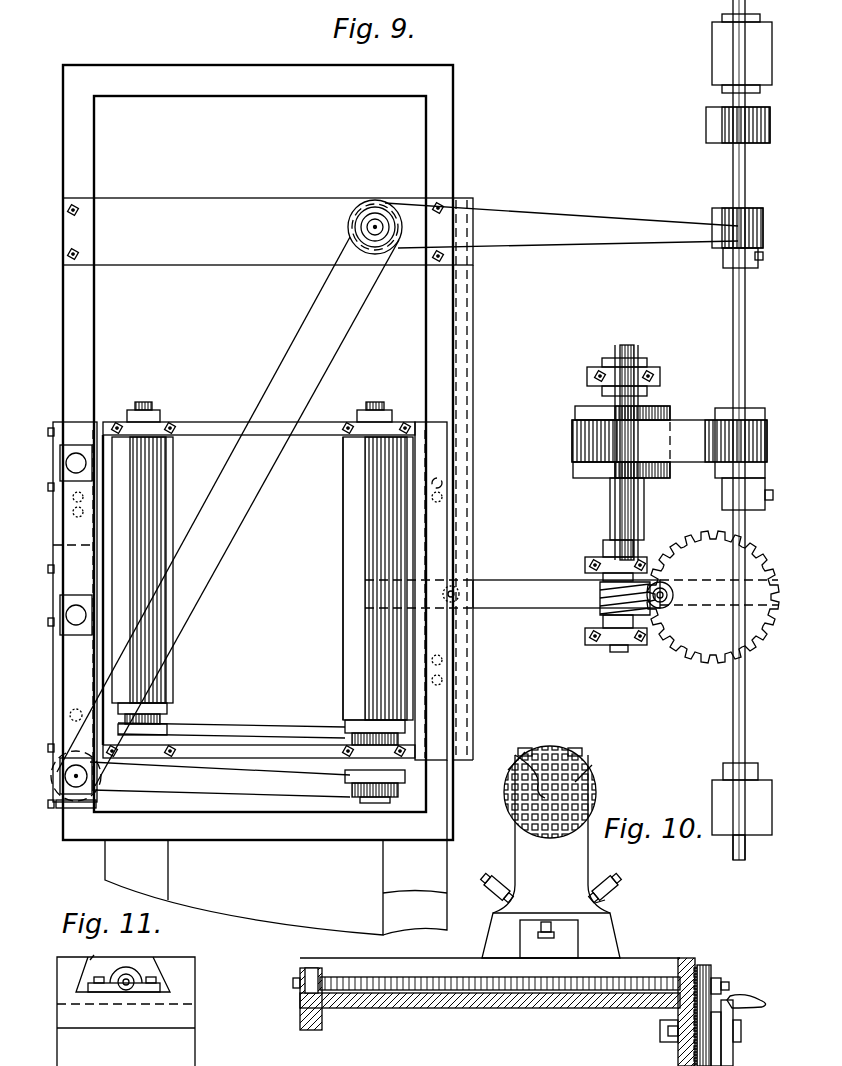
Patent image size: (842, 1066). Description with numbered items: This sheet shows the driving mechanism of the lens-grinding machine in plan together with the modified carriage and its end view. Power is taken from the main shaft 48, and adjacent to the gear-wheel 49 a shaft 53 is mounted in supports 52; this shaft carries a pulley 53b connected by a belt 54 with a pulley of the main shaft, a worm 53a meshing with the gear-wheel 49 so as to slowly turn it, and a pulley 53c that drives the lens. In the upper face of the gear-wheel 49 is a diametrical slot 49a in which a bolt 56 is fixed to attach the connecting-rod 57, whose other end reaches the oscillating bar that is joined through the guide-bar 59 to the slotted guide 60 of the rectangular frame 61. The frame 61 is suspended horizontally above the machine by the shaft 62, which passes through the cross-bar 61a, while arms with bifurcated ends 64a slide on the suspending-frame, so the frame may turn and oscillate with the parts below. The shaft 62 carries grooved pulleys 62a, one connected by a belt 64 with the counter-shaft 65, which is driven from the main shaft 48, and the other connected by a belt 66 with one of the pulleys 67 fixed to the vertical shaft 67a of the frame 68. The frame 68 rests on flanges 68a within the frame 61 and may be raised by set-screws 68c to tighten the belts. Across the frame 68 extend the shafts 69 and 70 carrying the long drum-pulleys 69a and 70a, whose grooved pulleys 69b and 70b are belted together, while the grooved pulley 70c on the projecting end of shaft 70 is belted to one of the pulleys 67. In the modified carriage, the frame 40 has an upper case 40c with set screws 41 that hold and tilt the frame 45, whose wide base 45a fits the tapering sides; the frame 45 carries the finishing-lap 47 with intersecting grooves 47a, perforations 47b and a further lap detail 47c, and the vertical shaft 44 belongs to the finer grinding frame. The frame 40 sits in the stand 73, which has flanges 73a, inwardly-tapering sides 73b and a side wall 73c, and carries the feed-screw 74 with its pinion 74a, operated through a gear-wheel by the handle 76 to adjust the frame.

In FIG. 9, the rectangular frame 61 is at (252, 82).
In FIG. 9, the cross-bar 61a is at (268, 231).
In FIG. 9, the shaft 62 is at (378, 222).
In FIG. 9, the grooved pulleys 62a is at (360, 208).
In FIG. 9, the belt 64 is at (610, 225).
In FIG. 9, the bifurcated ends 64a is at (175, 870).
In FIG. 9, the counter-shaft 65 is at (733, 174).
In FIG. 9, the belt 66 is at (330, 335).
In FIG. 9, the pulleys 67 is at (62, 773).
In FIG. 9, the vertical shaft 67a is at (60, 800).
In FIG. 9, the frame 68 is at (222, 420).
In FIG. 9, the flanges 68a is at (430, 420).
In FIG. 9, the set-screws 68c is at (455, 482).
In FIG. 9, the shaft 69 is at (152, 402).
In FIG. 9, the drum-pulley 69a is at (72, 556).
In FIG. 9, the grooved pulley 69b is at (160, 715).
In FIG. 9, the shaft 70 is at (384, 392).
In FIG. 9, the drum-pulley 70a is at (360, 570).
In FIG. 9, the grooved pulley 70b is at (350, 722).
In FIG. 9, the grooved pulley 70c is at (355, 797).
In FIG. 9, the guide-bar 59 is at (460, 588).
In FIG. 9, the slotted guide 60 is at (467, 740).
In FIG. 9, the connecting-rod 57 is at (512, 594).
In FIG. 9, the bolt 56 is at (662, 608).
In FIG. 9, the supports 52 is at (612, 372).
In FIG. 9, the shaft 53 is at (645, 332).
In FIG. 9, the worm 53a is at (605, 608).
In FIG. 9, the pulley 53b is at (585, 412).
In FIG. 9, the pulley 53c is at (612, 518).
In FIG. 9, the belt 54 is at (669, 441).
In FIG. 9, the main shaft 48 is at (740, 430).
In FIG. 9, the gear-wheel 49 is at (713, 597).
In FIG. 9, the diametrical slot 49a is at (700, 592).
In FIG. 10, the finishing-lap 47 is at (555, 748).
In FIG. 10, the intersecting grooves 47a is at (594, 772).
In FIG. 10, the perforations 47b is at (538, 745).
In FIG. 10, the disc spoke 47c is at (506, 770).
In FIG. 10, the frame 45 is at (520, 853).
In FIG. 10, the wide base 45a is at (549, 919).
In FIG. 10, the set screws 41 is at (493, 880).
In FIG. 10, the frame 40 is at (612, 945).
In FIG. 10, the upper case 40c is at (590, 905).
In FIG. 10, the vertical shaft 44 is at (432, 975).
In FIG. 10, the flanges 73a is at (300, 1020).
In FIG. 11, the flanges 73a is at (161, 1050).
In FIG. 10, the inwardly-tapering sides 73b is at (320, 970).
In FIG. 11, the inwardly-tapering sides 73b is at (175, 965).
In FIG. 10, the pinion 74a is at (704, 965).
In FIG. 10, the handle 76 is at (755, 1008).
In FIG. 11, the stand 73 is at (195, 998).
In FIG. 11, the dovetail wall 73c is at (78, 966).
In FIG. 11, the feed-screw 74 is at (126, 974).